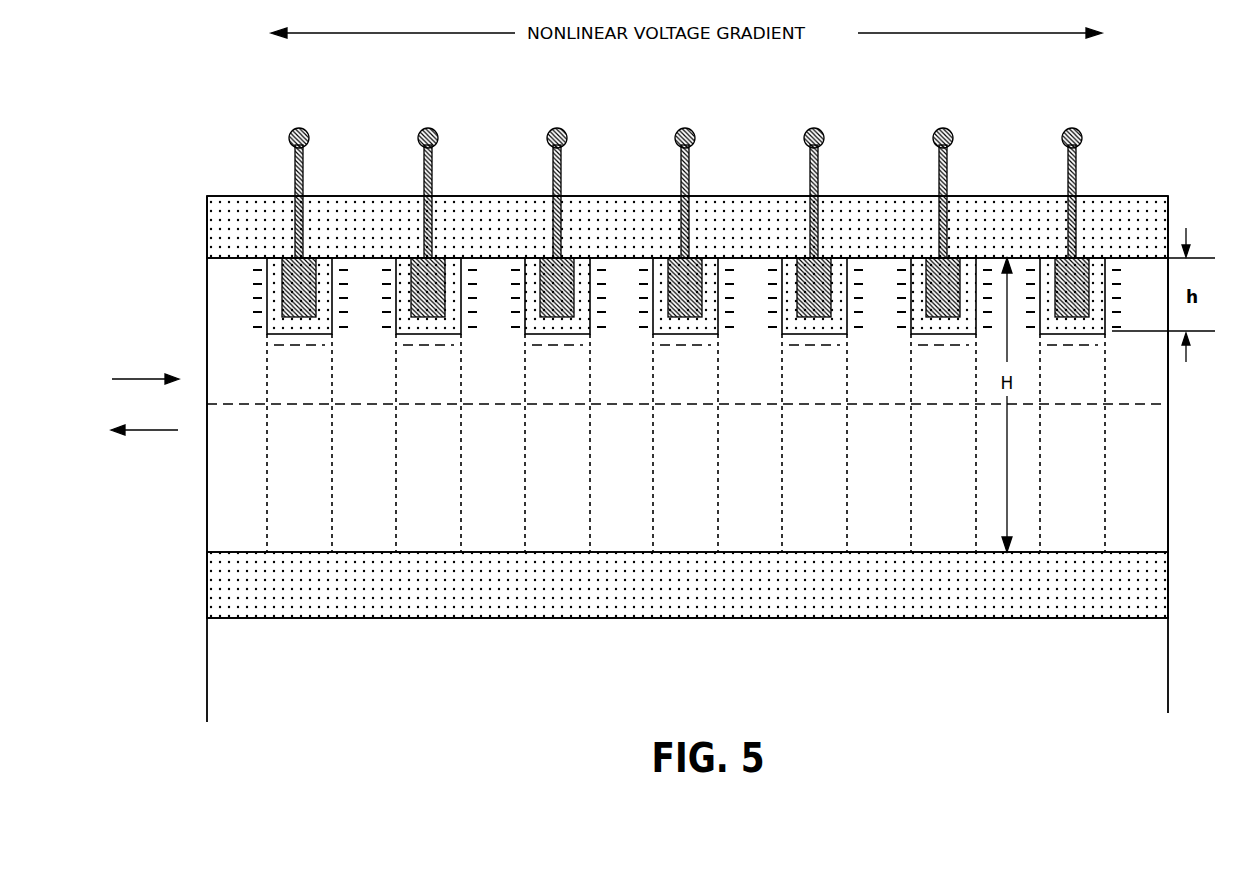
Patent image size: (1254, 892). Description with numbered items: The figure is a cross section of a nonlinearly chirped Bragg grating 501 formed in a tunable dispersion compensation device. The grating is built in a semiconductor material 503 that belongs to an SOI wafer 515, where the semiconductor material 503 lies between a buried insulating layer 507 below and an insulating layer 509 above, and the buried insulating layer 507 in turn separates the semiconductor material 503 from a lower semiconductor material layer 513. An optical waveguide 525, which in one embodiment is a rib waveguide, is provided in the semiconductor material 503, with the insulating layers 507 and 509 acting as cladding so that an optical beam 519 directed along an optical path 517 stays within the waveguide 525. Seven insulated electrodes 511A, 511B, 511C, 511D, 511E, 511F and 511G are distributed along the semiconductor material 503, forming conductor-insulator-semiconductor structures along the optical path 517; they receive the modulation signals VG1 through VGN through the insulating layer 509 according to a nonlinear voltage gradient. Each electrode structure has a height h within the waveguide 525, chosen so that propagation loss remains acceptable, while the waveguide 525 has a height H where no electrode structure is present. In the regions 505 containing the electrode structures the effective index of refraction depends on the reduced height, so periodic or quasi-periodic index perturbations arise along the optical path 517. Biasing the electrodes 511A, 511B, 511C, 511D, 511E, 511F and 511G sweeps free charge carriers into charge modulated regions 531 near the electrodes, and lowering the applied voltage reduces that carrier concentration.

The nonlinearly chirped Bragg grating 501 is at (1238, 78).
The semiconductor material 503 is at (1156, 500).
The regions of the waveguide including the insulated electrode structures 505 is at (289, 539).
The buried insulating layer 507 is at (207, 590).
The insulating layer 509 is at (207, 228).
The insulated electrode 511A is at (290, 258).
The insulated electrode 511B is at (419, 258).
The insulated electrode 511C is at (548, 258).
The insulated electrode 511D is at (676, 258).
The insulated electrode 511E is at (805, 258).
The insulated electrode 511F is at (934, 258).
The insulated electrode 511G is at (1063, 258).
The semiconductor material layer 513 is at (1156, 668).
The SOI wafer 515 is at (1163, 180).
The optical path 517 is at (1160, 401).
The optical beam 519 is at (145, 381).
The optical waveguide 525 is at (1181, 466).
The charge modulated regions 531 is at (253, 334).